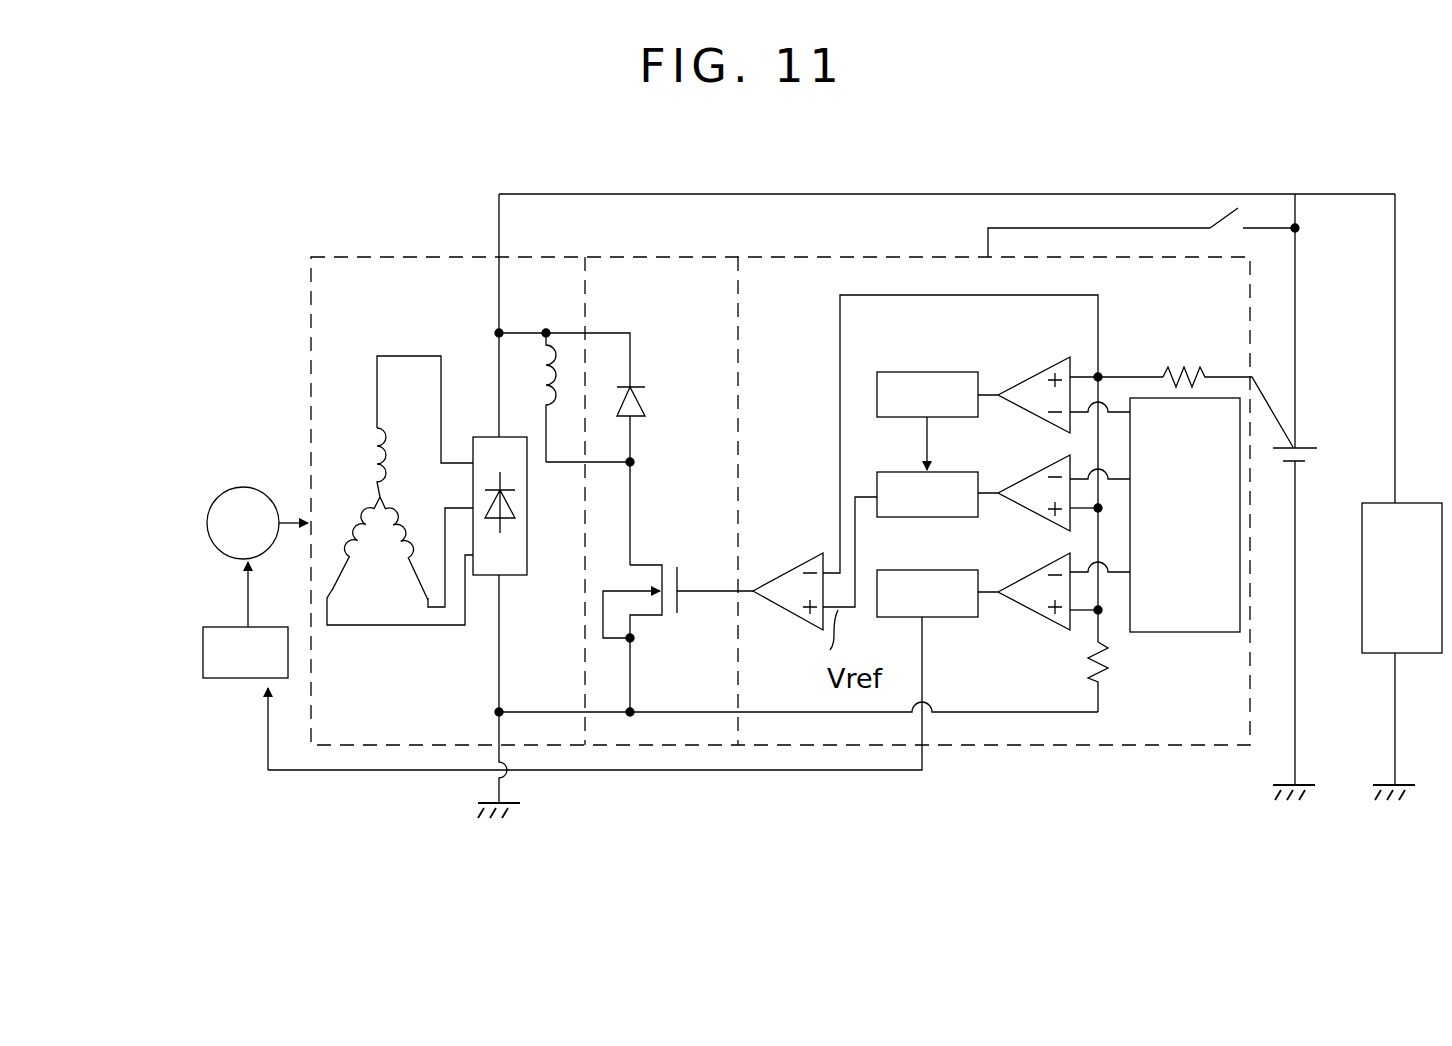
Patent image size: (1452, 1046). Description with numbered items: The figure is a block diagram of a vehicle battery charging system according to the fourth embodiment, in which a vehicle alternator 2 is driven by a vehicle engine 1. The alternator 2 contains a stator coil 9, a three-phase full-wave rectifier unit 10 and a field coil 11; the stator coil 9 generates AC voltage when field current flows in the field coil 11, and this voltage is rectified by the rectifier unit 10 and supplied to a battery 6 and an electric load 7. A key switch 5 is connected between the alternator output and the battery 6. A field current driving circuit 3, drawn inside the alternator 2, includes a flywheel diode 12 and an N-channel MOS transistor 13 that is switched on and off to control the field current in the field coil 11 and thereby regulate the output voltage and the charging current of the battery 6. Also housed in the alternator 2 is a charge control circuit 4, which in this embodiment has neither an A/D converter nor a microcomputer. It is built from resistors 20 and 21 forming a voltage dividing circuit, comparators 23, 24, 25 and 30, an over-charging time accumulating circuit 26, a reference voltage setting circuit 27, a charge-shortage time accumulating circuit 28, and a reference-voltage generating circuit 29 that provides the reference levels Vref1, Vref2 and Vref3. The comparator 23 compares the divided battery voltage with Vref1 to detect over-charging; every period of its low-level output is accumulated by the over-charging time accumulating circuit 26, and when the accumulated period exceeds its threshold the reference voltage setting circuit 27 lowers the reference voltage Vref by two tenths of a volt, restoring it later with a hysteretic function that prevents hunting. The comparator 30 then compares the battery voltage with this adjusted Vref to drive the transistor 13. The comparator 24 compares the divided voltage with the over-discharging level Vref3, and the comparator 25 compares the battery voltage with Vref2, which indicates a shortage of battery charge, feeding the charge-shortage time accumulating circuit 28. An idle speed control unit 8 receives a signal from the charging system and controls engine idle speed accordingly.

The vehicle engine 1 is at (243, 487).
The vehicle alternator 2 is at (311, 272).
The field current driving circuit 3 is at (690, 257).
The charge control circuit 4 is at (890, 257).
The key switch 5 is at (1225, 218).
The battery 6 is at (1298, 446).
The electric load 7 is at (1405, 503).
The idle speed control unit 8 is at (222, 678).
The stator coil 9 is at (382, 625).
The three-phase full-wave rectifier unit 10 is at (513, 575).
The field coil 11 is at (533, 390).
The flywheel diode 12 is at (645, 402).
The N-channel MOS transistor 13 is at (652, 565).
The resistor 20 is at (1180, 365).
The resistor 21 is at (1100, 680).
The comparator 23 is at (1033, 372).
The comparator 24 is at (1033, 470).
The comparator 25 is at (1023, 610).
The over-charging time accumulating circuit 26 is at (930, 372).
The reference voltage setting circuit 27 is at (895, 472).
The charge-shortage time accumulating circuit 28 is at (962, 570).
The reference-voltage generating circuit 29 is at (1185, 632).
The comparator 30 is at (790, 610).